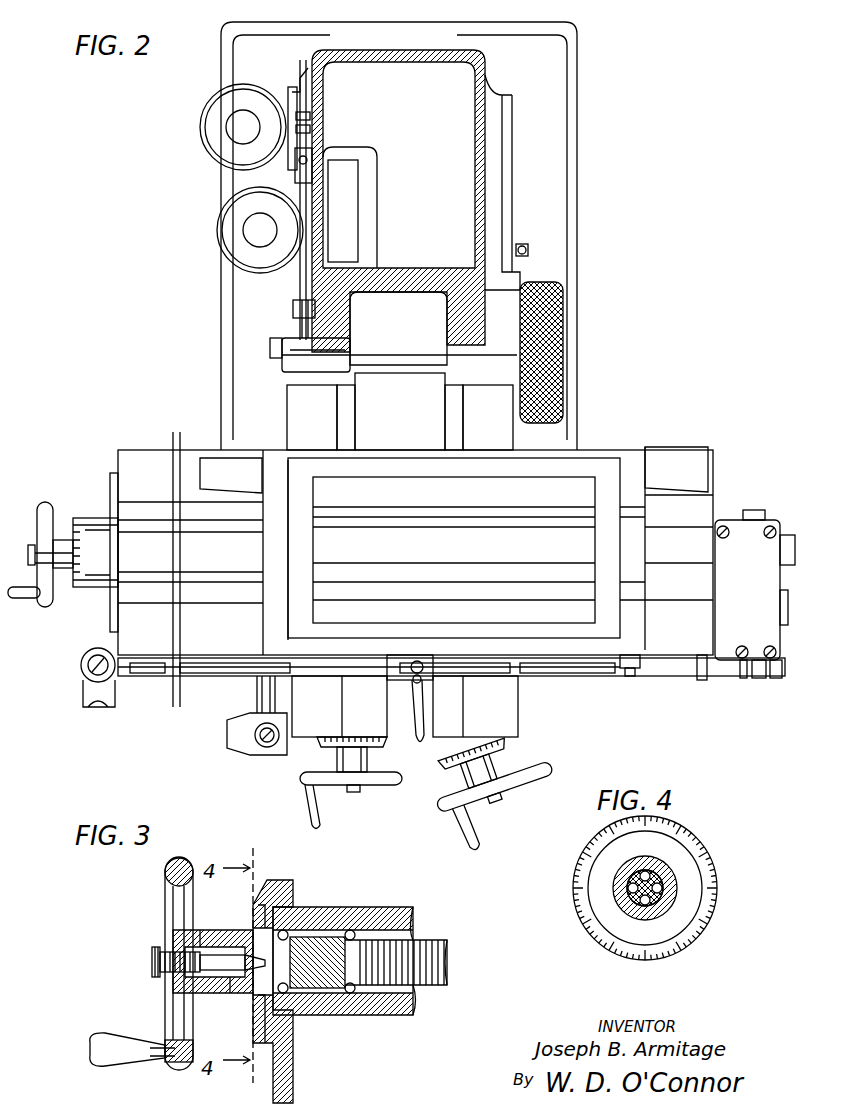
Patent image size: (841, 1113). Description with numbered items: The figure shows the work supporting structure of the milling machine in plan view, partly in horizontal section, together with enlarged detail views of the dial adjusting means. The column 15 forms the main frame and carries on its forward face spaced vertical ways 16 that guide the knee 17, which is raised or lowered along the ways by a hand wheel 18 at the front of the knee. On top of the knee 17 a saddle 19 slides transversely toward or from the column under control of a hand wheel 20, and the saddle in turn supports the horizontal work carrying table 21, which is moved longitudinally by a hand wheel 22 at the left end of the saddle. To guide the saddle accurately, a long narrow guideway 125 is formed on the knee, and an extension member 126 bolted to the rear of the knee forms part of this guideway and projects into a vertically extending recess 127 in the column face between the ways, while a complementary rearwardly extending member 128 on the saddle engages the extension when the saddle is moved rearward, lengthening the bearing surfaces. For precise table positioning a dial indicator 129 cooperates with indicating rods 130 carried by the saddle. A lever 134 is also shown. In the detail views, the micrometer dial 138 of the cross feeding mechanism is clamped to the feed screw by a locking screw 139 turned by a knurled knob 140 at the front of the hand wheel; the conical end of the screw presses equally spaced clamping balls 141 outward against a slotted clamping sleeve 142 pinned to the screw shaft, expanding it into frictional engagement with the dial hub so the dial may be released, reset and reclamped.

In FIG. 2, the column member 15 is at (486, 70).
In FIG. 2, the vertical ways 16 is at (316, 372).
In FIG. 2, the knee 17 is at (290, 415).
In FIG. 3, the knee 17 is at (288, 1050).
In FIG. 2, the hand wheel 18 is at (438, 805).
In FIG. 2, the saddle 19 is at (138, 456).
In FIG. 2, the hand wheel 20 is at (383, 777).
In FIG. 3, the hand wheel 20 is at (163, 878).
In FIG. 2, the work carrying table 21 is at (632, 455).
In FIG. 2, the hand wheel 22 is at (47, 502).
In FIG. 2, the guideway 125 is at (405, 718).
In FIG. 2, the extension member 126 is at (405, 345).
In FIG. 2, the recess 127 is at (410, 290).
In FIG. 2, the rearwardly extending member 128 is at (372, 431).
In FIG. 2, the dial indicator 129 is at (81, 662).
In FIG. 2, the indicating rods 130 is at (215, 668).
In FIG. 2, the control lever 134 is at (412, 705).
In FIG. 2, the micrometer dial 138 is at (318, 742).
In FIG. 3, the micrometer dial 138 is at (256, 1020).
In FIG. 4, the micrometer dial 138 is at (718, 890).
In FIG. 3, the locking screw 139 is at (312, 980).
In FIG. 4, the locking screw 139 is at (626, 905).
In FIG. 3, the knurled actuating knob 140 is at (152, 962).
In FIG. 3, the clamping balls 141 is at (243, 985).
In FIG. 4, the clamping balls 141 is at (665, 888).
In FIG. 3, the slotted clamping sleeve 142 is at (245, 930).
In FIG. 4, the slotted clamping sleeve 142 is at (662, 905).